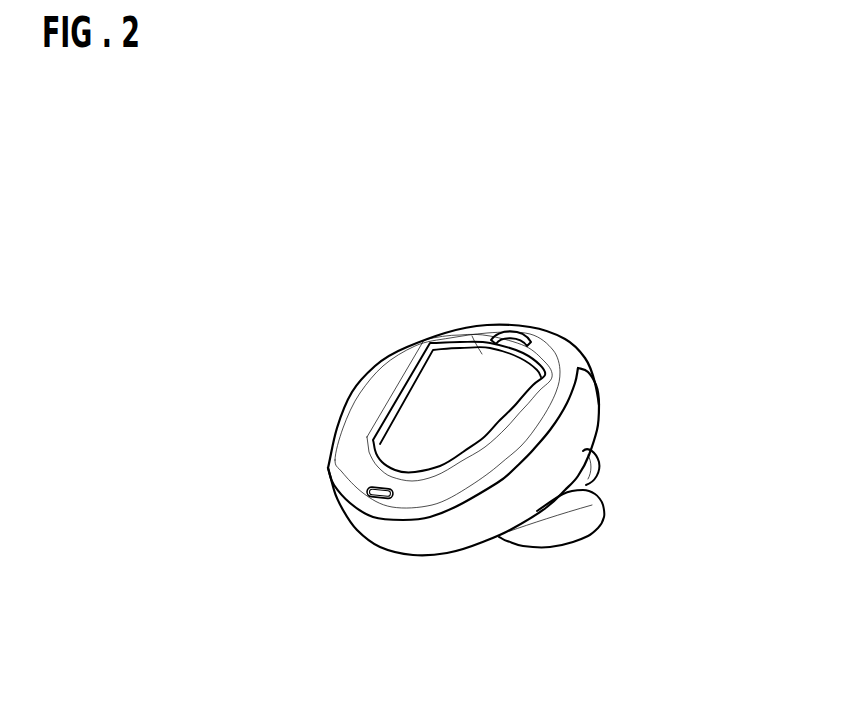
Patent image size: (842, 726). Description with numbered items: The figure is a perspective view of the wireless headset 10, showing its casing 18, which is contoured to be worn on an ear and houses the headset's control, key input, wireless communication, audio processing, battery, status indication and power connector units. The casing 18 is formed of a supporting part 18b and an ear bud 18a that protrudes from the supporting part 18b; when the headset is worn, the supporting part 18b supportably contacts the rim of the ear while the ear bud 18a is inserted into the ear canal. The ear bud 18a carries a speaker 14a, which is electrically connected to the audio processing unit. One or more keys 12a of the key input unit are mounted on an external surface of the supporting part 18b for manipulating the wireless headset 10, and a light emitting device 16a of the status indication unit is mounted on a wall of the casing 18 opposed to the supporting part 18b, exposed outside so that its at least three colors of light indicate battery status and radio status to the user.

The wireless headset 10 is at (325, 291).
The keys 12a is at (483, 327).
The speaker 14a is at (551, 544).
The light emitting device 16a is at (373, 486).
The casing 18 is at (542, 461).
The ear bud 18a is at (590, 477).
The supporting part 18b is at (599, 399).